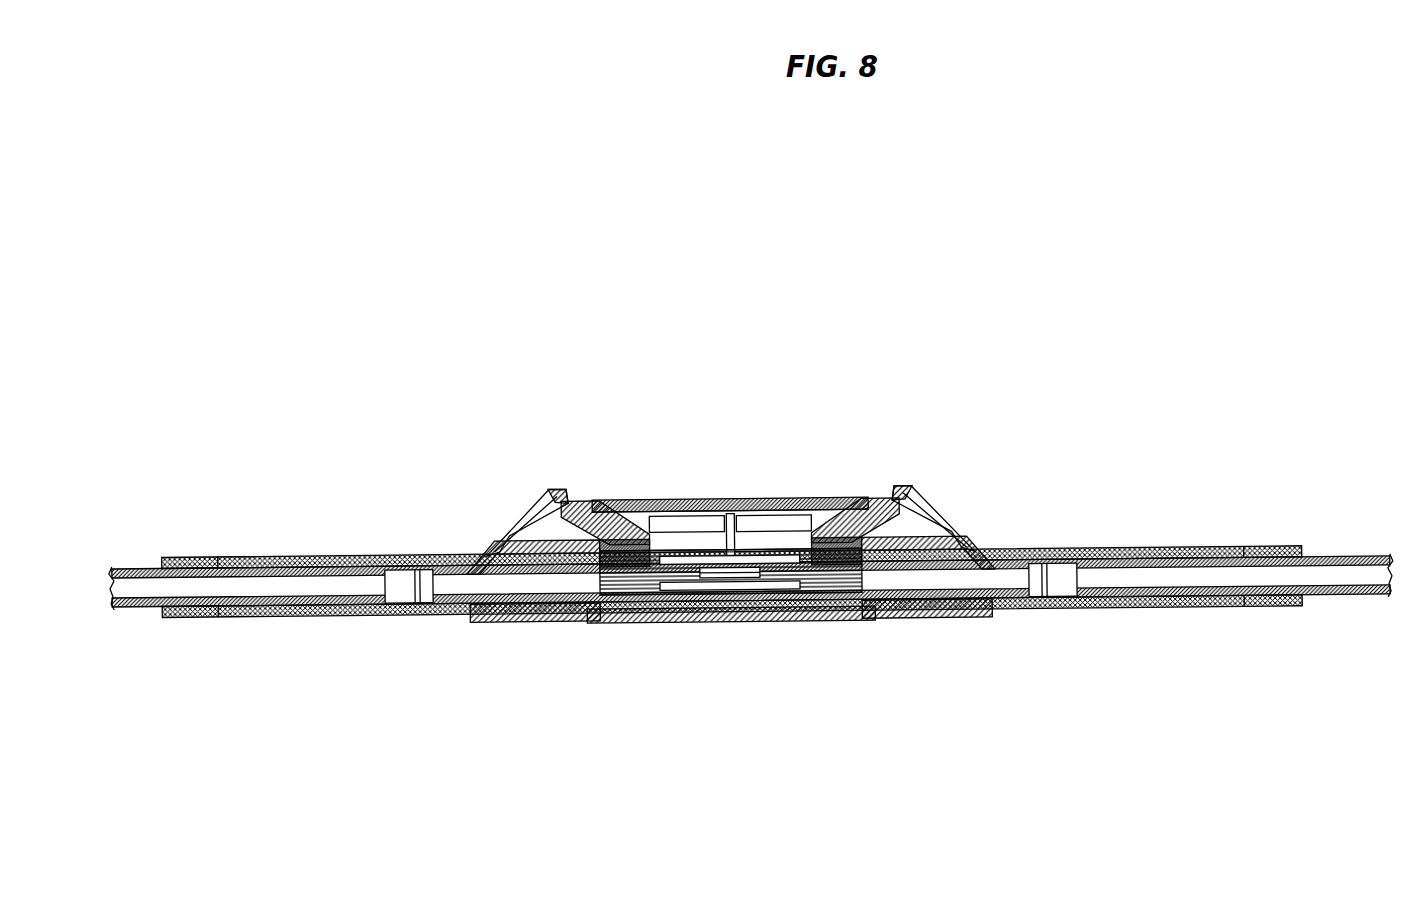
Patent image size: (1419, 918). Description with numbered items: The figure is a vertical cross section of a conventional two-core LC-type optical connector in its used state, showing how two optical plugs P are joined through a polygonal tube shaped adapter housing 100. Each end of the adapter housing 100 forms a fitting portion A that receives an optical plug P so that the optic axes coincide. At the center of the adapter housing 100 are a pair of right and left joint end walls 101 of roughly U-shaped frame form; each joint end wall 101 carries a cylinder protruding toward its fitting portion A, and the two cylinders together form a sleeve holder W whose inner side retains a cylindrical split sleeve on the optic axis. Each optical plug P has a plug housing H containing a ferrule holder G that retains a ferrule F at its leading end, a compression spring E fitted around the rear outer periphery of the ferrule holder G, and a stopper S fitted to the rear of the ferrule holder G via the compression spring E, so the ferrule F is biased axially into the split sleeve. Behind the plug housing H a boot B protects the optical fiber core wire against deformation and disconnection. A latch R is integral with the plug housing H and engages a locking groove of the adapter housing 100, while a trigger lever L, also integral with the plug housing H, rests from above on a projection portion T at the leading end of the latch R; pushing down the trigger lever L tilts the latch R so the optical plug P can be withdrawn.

The optical plug P is at (303, 527).
The boot B is at (346, 552).
The fitting portion A is at (504, 533).
The trigger lever L is at (531, 502).
The projection portion T is at (576, 500).
The latch R is at (586, 510).
The plug housing H is at (681, 560).
The adapter housing 100 is at (699, 507).
The joint end walls 101 is at (750, 516).
The stopper S is at (524, 628).
The compression spring E is at (608, 630).
The ferrule holder G is at (663, 628).
The ferrule F is at (704, 628).
The sleeve holder W is at (718, 628).